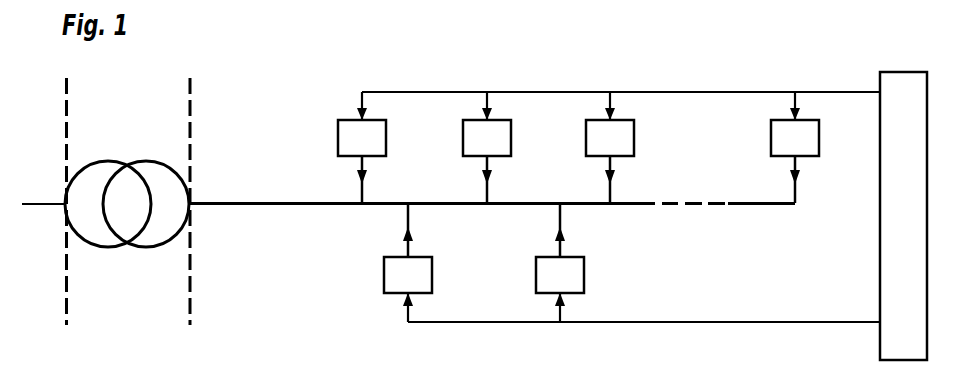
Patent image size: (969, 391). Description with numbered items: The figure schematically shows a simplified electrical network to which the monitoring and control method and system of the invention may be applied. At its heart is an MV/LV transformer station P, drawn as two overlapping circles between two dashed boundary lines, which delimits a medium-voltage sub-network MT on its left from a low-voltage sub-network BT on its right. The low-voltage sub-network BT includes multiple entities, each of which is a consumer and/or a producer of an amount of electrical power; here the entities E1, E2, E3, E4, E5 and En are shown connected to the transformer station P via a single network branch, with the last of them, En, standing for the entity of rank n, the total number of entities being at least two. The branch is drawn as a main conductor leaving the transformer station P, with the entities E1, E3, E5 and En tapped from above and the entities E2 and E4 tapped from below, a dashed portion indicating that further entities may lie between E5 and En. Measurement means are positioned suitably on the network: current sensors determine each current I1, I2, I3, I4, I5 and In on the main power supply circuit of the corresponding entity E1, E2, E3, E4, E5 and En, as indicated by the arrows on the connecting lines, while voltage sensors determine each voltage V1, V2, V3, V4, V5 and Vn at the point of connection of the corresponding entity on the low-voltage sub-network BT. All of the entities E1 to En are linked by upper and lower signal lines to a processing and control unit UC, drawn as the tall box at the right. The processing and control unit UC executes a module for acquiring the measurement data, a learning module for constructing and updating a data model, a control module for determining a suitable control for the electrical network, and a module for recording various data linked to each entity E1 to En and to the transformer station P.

The medium-voltage sub-network MT is at (38, 201).
The MV/LV transformer station P is at (127, 180).
The low-voltage sub-network BT is at (219, 201).
The processing and control unit UC is at (644, 216).
The entity E1 is at (362, 124).
The entity E2 is at (408, 289).
The entity E3 is at (487, 124).
The entity E4 is at (560, 289).
The entity E5 is at (610, 124).
The entity En is at (795, 124).
The current I1 is at (351, 179).
The current I2 is at (397, 230).
The current I3 is at (477, 179).
The current I4 is at (551, 230).
The current I5 is at (599, 179).
The current In is at (784, 179).
The voltage V1 is at (359, 220).
The voltage V2 is at (405, 190).
The voltage V3 is at (490, 225).
The voltage V4 is at (560, 190).
The voltage V5 is at (613, 225).
The voltage Vn is at (798, 225).